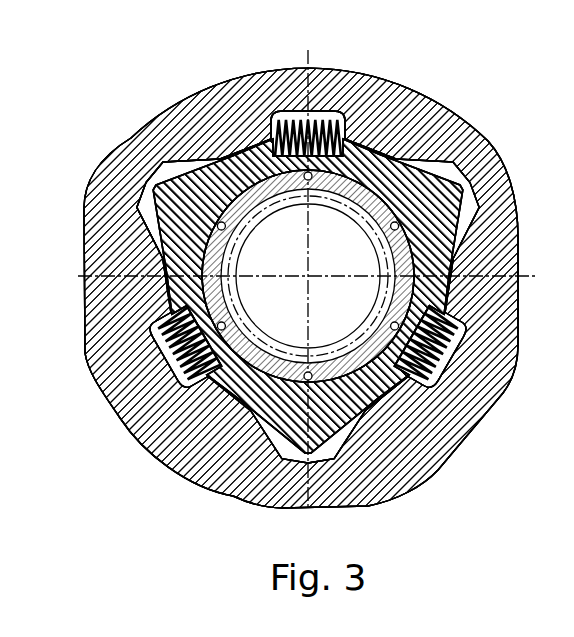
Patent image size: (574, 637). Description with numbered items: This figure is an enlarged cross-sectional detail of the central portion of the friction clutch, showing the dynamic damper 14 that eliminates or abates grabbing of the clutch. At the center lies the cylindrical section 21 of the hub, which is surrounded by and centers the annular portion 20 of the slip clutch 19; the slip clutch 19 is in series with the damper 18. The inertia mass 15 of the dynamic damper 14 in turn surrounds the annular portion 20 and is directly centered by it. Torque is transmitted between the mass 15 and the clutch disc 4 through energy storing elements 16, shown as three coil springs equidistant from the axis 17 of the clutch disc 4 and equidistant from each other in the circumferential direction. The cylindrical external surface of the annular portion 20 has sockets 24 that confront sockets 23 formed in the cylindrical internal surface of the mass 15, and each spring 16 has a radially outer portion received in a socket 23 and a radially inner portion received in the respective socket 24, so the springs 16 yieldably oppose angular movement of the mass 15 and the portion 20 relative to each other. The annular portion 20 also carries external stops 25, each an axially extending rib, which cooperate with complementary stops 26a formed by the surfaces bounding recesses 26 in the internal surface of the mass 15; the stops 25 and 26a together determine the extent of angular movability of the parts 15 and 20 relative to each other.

The clutch disc 4 is at (218, 95).
The dynamic damper 14 is at (243, 466).
The inertia mass 15 is at (387, 83).
The energy storing elements 16 is at (330, 107).
The axis 17 is at (305, 262).
The damper 18 is at (160, 378).
The slip clutch 19 is at (125, 284).
The annular portion 20 is at (440, 282).
The cylindrical section 21 is at (210, 157).
The recesses or sockets 23 is at (160, 358).
The recesses or sockets 24 is at (200, 313).
The external abutments or stops 25 is at (150, 177).
The recesses 26 is at (140, 209).
The complementary stops 26a is at (342, 414).